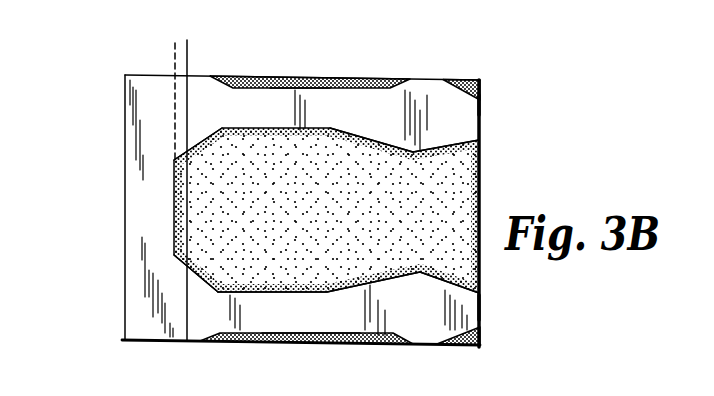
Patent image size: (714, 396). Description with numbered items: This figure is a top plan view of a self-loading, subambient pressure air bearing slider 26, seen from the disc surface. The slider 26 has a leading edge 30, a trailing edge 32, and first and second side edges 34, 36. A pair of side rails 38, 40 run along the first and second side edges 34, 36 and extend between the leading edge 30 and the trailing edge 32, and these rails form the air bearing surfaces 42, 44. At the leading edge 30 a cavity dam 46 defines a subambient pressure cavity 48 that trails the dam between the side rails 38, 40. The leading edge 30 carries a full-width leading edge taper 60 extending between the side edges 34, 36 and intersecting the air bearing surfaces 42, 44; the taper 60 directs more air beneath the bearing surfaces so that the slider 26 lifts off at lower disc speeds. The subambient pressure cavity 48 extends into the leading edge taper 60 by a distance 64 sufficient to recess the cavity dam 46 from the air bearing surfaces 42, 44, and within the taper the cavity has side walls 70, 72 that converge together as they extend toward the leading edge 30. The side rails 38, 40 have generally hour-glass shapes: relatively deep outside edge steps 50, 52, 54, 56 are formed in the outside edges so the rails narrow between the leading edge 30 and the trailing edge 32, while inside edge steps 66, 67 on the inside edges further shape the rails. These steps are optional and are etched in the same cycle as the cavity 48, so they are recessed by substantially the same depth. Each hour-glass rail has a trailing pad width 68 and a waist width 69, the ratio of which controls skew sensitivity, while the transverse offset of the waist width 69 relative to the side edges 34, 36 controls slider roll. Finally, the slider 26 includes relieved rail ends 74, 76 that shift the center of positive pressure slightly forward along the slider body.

The slider 26 is at (422, 64).
The leading edge 30 is at (123, 311).
The trailing edge 32 is at (483, 166).
The first side edge 34 is at (214, 78).
The second side edge 36 is at (258, 343).
The side rail 38 is at (485, 102).
The side rail 40 is at (486, 306).
The air bearing surface 42 is at (331, 102).
The air bearing surface 44 is at (340, 313).
The cavity dam 46 is at (147, 198).
The subambient pressure cavity 48 is at (320, 221).
The outside edge step 50 is at (272, 84).
The outside edge step 52 is at (479, 80).
The outside edge step 54 is at (306, 336).
The outside edge step 56 is at (466, 354).
The leading edge taper 60 is at (185, 346).
The distance 64 is at (205, 43).
The inside edge step 66 is at (313, 136).
The inside edge step 67 is at (288, 290).
The trailing pad width 68 is at (258, 268).
The waist width 69 is at (256, 343).
The side wall 70 is at (203, 159).
The side wall 72 is at (181, 250).
The relieved rail end 74 is at (479, 155).
The relieved rail end 76 is at (452, 284).